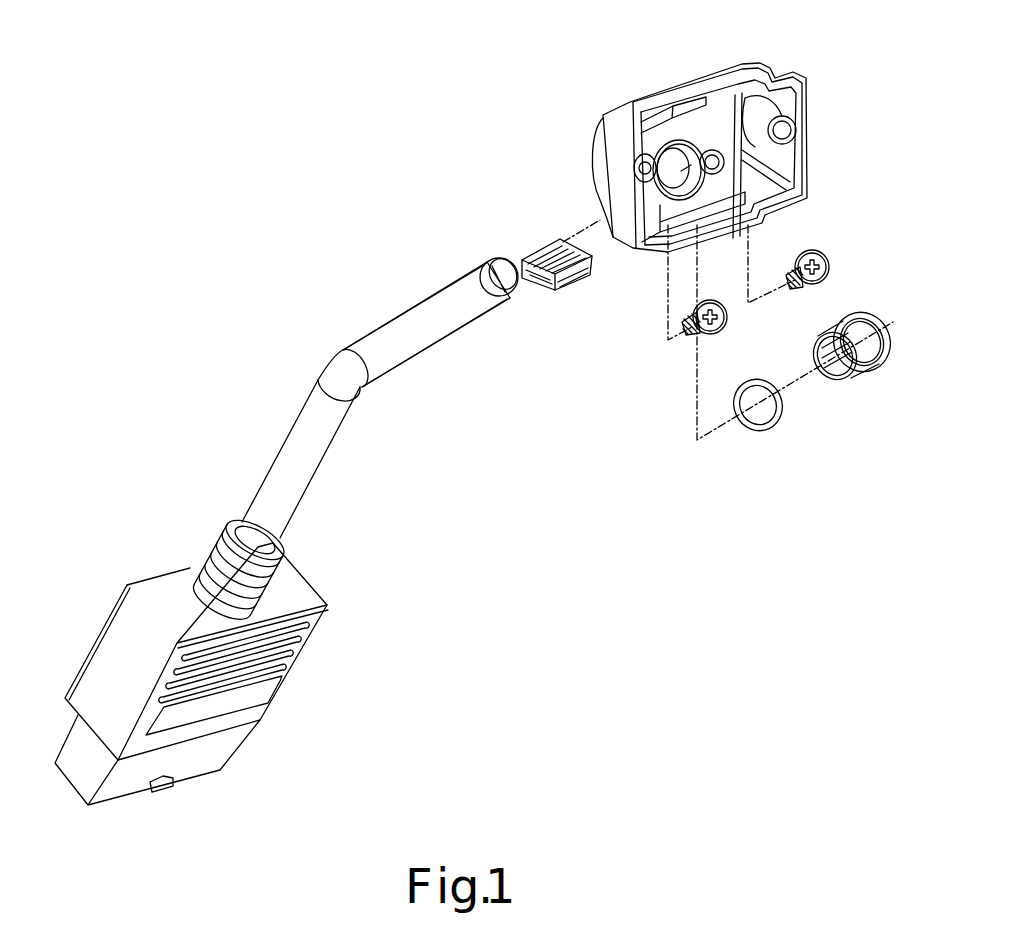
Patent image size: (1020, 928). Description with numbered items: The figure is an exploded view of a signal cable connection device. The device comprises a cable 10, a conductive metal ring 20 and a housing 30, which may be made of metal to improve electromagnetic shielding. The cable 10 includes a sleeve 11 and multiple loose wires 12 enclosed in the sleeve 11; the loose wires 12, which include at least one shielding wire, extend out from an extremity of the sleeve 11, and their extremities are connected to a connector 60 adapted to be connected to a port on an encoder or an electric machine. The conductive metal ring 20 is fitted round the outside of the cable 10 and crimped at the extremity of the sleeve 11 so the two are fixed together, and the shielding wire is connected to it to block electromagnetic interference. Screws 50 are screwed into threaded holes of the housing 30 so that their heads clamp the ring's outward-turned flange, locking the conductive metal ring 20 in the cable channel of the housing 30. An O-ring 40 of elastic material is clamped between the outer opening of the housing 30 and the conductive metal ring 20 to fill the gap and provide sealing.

The cable 10 is at (278, 470).
The sleeve 11 is at (397, 333).
The loose wires 12 is at (505, 256).
The conductive metal ring 20 is at (877, 367).
The housing 30 is at (700, 86).
The O-ring 40 is at (767, 430).
The screw 50 is at (716, 302).
The connector 60 is at (563, 282).